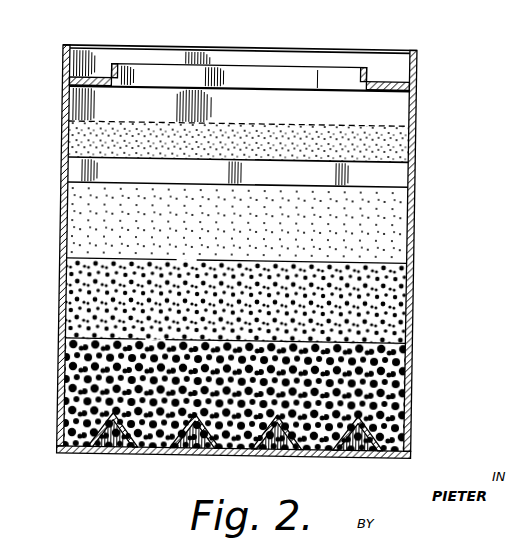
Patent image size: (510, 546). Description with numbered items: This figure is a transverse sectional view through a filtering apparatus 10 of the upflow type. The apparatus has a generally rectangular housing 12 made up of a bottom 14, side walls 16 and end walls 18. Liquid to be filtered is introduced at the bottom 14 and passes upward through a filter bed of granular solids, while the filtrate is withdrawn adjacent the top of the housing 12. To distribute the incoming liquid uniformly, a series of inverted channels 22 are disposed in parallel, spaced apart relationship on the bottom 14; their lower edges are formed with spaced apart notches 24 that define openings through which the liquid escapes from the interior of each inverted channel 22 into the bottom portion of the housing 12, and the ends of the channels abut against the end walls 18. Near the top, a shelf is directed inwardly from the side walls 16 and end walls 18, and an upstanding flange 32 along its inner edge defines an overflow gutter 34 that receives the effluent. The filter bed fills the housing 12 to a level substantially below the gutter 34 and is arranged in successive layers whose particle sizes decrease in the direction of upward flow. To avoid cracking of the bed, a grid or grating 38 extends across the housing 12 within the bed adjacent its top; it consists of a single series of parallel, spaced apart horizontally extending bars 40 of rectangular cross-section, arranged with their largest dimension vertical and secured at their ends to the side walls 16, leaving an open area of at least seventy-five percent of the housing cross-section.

The filtering apparatus 10 is at (260, 249).
The housing 12 is at (420, 218).
The bottom 14 is at (145, 455).
The side walls 16 is at (415, 138).
The end walls 18 is at (332, 43).
The inverted channels 22 is at (97, 427).
The notches 24 is at (79, 452).
The upstanding flange 32 is at (123, 64).
The gutter 34 is at (92, 64).
The grid or grating 38 is at (388, 156).
The bars 40 is at (397, 167).